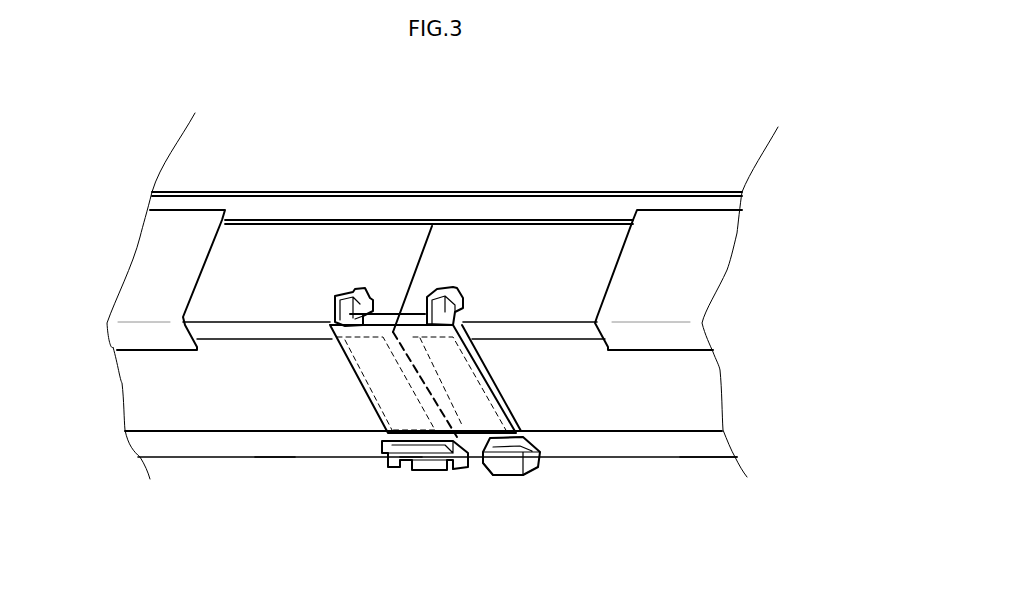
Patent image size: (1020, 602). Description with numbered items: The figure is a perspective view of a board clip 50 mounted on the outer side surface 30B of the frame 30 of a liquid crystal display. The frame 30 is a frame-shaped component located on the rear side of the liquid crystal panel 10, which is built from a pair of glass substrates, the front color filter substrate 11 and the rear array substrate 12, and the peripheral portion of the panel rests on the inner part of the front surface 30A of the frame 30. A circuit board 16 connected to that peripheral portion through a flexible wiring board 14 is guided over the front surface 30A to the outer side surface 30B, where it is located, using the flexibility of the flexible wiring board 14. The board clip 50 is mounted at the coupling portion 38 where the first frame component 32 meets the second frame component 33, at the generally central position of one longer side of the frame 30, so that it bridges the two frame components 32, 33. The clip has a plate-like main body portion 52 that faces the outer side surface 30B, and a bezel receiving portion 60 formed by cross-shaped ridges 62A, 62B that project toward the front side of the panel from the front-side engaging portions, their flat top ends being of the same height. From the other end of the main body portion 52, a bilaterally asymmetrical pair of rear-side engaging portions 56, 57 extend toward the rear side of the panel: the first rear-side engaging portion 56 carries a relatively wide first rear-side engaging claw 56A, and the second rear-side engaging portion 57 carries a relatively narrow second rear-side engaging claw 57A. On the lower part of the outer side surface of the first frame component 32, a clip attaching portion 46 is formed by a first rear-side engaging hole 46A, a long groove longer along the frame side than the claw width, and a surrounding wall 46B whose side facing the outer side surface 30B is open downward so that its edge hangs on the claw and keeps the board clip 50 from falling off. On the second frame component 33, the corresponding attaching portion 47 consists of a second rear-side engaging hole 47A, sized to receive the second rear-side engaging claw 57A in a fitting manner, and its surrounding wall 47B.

The liquid crystal panel 10 is at (196, 155).
The color filter substrate 11 is at (680, 170).
The array substrate 12 is at (563, 207).
The flexible wiring board 14 is at (168, 272).
The circuit board 16 is at (160, 400).
The frame 30 is at (421, 499).
The front surface 30A is at (497, 242).
The outer side surface 30B is at (230, 447).
The first frame component 32 is at (278, 467).
The second frame component 33 is at (707, 466).
The coupling portion 38 is at (420, 279).
The clip attaching portion 46 is at (402, 514).
The first rear-side engaging hole 46A is at (383, 442).
The surrounding wall 46B is at (402, 458).
The clip attaching portion 47 is at (543, 477).
The second rear-side engaging hole 47A is at (523, 425).
The surrounding wall 47B is at (498, 465).
The board clip 50 is at (466, 361).
The main body portion 52 is at (372, 368).
The first rear-side engaging portion 56 is at (442, 480).
The first rear-side engaging claw 56A is at (427, 470).
The second rear-side engaging portion 57 is at (576, 494).
The second rear-side engaging claw 57A is at (500, 448).
The bezel receiving portion 60 is at (380, 230).
The ridge 62A is at (337, 292).
The ridge 62B is at (447, 292).